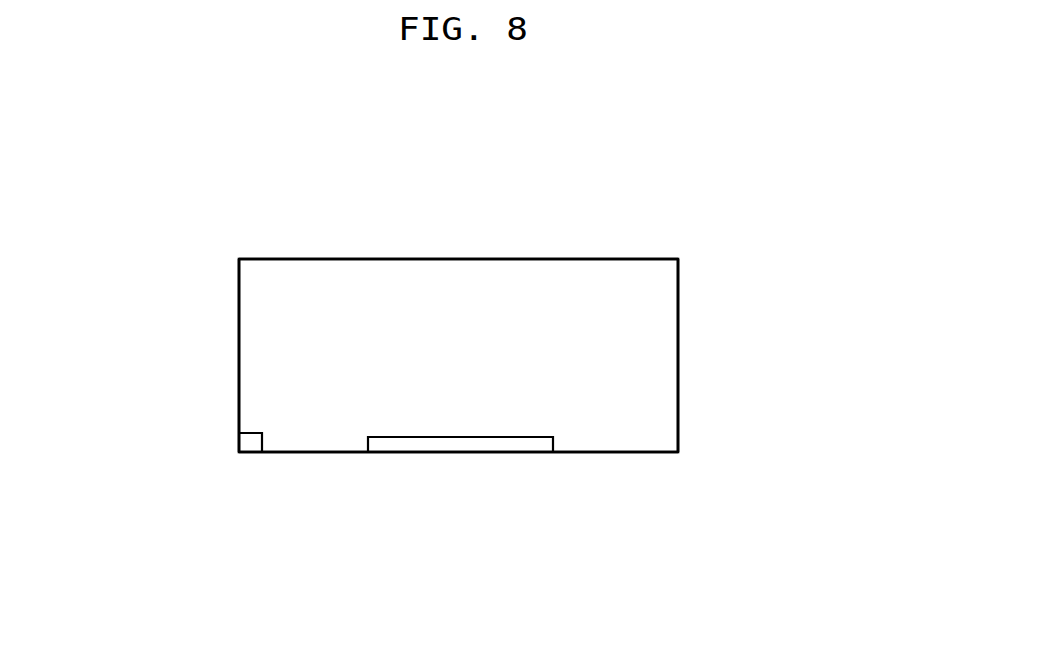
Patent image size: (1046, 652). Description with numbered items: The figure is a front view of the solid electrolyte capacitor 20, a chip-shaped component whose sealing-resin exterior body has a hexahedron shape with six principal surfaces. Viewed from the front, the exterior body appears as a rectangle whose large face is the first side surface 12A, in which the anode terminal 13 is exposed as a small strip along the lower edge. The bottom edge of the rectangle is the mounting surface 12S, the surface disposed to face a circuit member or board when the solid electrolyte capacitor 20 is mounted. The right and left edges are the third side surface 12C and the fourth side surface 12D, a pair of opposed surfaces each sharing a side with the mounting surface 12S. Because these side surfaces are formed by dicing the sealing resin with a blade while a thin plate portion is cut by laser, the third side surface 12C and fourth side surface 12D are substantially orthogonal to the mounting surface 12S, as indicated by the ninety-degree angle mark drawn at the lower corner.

The solid electrolyte capacitor 20 is at (462, 363).
The first side surface 12A is at (640, 330).
The third side surface 12C is at (682, 396).
The fourth side surface 12D is at (237, 369).
The mounting surface 12S is at (602, 453).
The anode terminal 13 is at (460, 445).